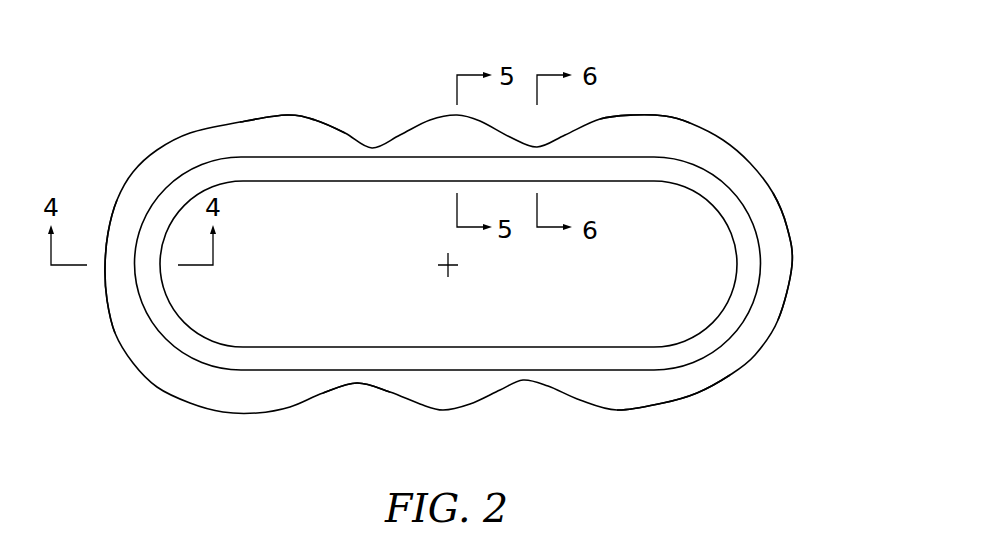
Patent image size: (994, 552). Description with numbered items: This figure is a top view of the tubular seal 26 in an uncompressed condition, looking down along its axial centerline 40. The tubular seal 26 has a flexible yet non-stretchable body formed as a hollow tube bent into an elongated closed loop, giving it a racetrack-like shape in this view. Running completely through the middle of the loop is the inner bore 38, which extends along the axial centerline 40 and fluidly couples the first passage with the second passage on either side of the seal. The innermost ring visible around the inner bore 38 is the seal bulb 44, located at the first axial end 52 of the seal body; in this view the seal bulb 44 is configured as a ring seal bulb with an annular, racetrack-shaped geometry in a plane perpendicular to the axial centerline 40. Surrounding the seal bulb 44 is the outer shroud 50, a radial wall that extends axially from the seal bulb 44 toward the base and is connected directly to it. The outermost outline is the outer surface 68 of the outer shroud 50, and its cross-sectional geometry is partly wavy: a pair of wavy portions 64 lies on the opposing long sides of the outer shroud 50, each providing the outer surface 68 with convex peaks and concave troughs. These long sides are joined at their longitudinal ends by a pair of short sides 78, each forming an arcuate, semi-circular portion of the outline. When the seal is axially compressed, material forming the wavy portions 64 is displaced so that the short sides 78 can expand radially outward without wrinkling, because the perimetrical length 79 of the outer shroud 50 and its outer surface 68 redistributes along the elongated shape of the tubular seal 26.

The tubular seal 26 is at (758, 67).
The inner bore 38 is at (321, 280).
The axial centerline 40 is at (452, 268).
The seal bulb 44 is at (732, 185).
The outer shroud 50 is at (665, 115).
The first axial end 52 is at (623, 173).
The wavy portions 64 is at (335, 100).
The outer surface 68 is at (178, 365).
The short sides 78 is at (107, 317).
The perimetrical length 79 is at (662, 403).